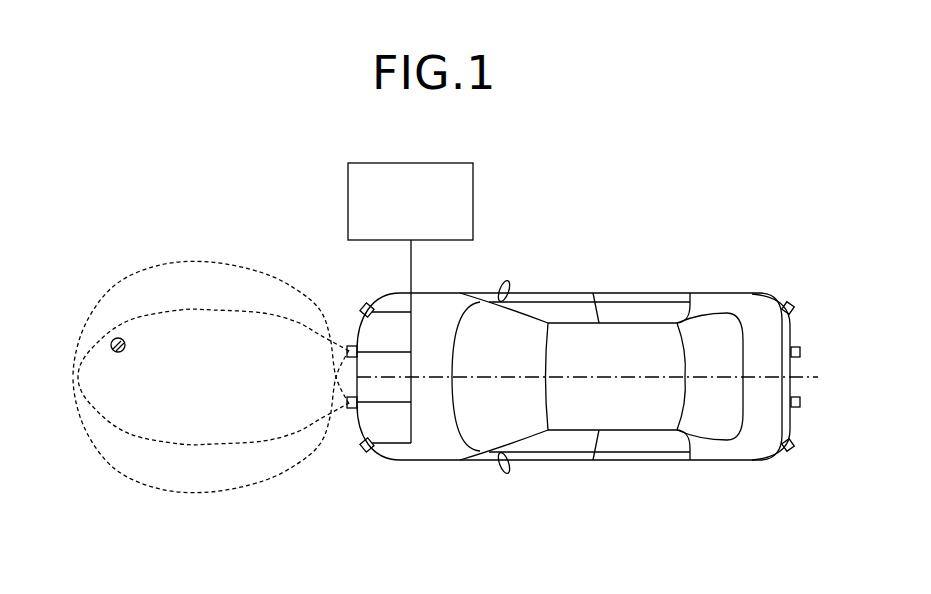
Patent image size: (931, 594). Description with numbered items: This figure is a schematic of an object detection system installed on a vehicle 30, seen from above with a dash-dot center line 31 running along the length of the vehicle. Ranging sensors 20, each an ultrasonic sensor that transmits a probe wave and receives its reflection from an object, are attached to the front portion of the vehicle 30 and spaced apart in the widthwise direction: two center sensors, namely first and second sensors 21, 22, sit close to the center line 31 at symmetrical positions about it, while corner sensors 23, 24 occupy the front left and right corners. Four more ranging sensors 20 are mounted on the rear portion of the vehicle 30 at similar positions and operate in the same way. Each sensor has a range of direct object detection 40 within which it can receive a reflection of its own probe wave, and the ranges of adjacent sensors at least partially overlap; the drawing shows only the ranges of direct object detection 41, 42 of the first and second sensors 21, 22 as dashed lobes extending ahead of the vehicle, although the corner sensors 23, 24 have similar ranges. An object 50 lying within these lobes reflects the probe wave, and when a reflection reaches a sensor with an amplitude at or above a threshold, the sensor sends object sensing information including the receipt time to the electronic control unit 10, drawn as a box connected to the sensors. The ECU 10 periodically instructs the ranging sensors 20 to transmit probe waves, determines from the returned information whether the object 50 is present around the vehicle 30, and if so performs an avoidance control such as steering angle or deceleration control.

The electronic control unit (ECU) 10 is at (429, 163).
The ranging sensors 20 is at (328, 275).
The first sensor 21 is at (350, 345).
The second sensor 22 is at (350, 410).
The corner sensor 23 is at (367, 304).
The corner sensor 24 is at (367, 452).
The vehicle 30 is at (619, 293).
The center line 31 is at (602, 378).
The range of direct object detection 40 is at (213, 380).
The range of direct object detection of the first sensor 41 is at (113, 280).
The range of direct object detection of the second sensor 42 is at (113, 475).
The object 50 is at (110, 339).